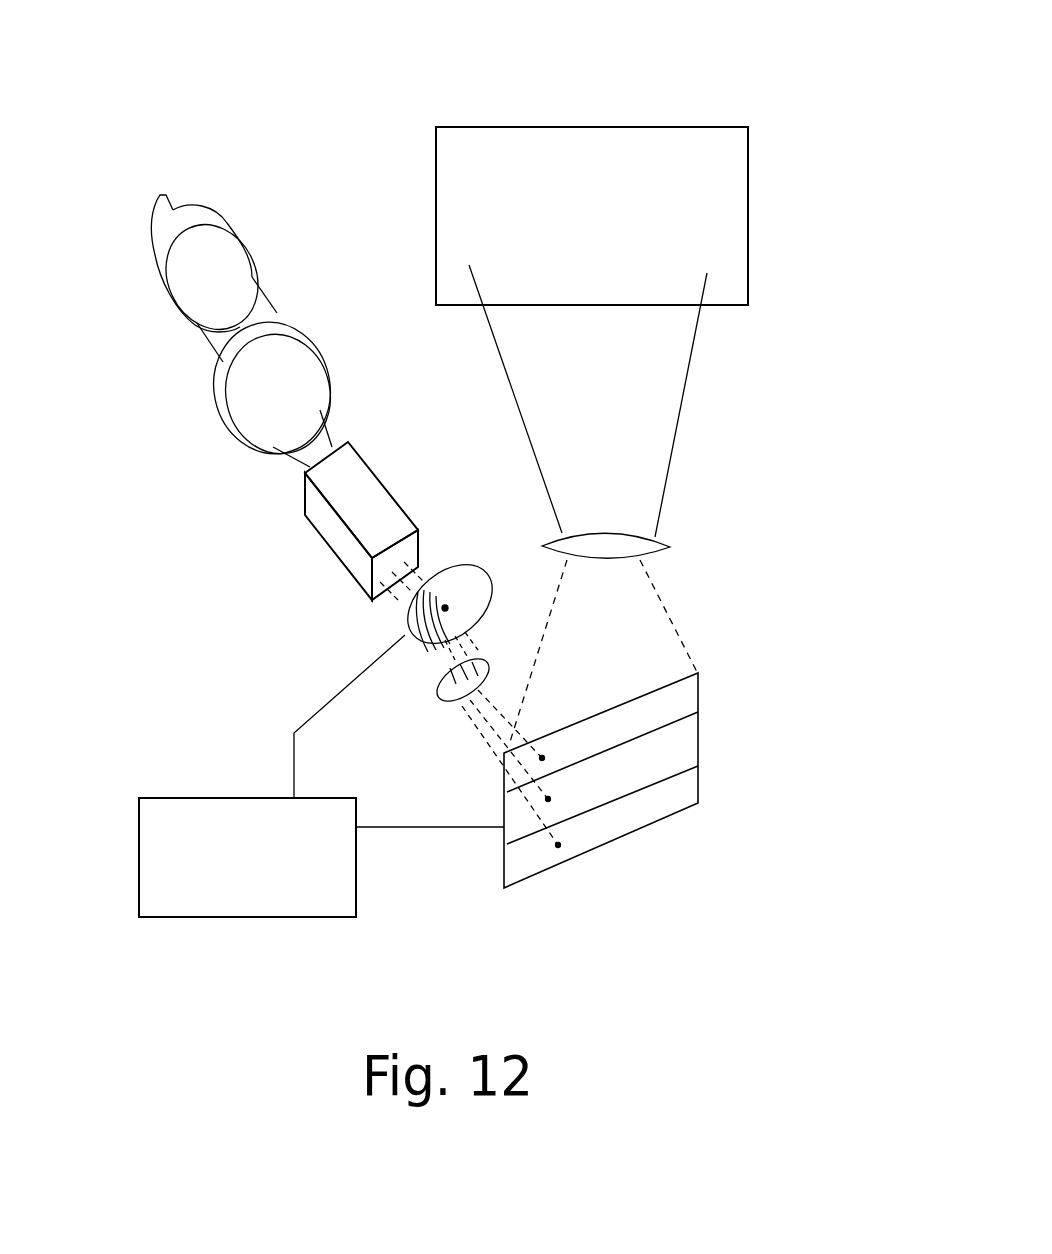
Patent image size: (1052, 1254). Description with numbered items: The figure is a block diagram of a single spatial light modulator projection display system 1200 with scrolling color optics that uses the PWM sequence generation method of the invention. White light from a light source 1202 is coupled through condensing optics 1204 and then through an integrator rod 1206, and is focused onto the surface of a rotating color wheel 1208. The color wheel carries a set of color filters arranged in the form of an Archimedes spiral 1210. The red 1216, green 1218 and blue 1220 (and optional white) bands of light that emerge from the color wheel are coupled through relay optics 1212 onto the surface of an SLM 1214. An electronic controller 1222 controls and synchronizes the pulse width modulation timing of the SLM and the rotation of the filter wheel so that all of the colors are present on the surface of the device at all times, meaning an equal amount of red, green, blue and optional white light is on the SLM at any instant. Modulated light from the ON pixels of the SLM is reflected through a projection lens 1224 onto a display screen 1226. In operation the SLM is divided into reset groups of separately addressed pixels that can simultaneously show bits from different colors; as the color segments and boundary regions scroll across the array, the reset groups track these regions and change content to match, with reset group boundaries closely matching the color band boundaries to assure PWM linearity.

The system 1200 is at (225, 45).
The light source 1202 is at (150, 245).
The condensing optics 1204 is at (215, 420).
The integrator rod 1206 is at (320, 540).
The rotating color wheel 1208 is at (473, 563).
The Archimedes spiral 1210 is at (408, 627).
The relay optics 1212 is at (440, 702).
The SLM 1214 is at (504, 888).
The red band of light 1216 is at (670, 700).
The green band of light 1218 is at (682, 747).
The blue band of light 1220 is at (670, 793).
The electronic controller 1222 is at (253, 917).
The projection lens 1224 is at (668, 547).
The display screen 1226 is at (750, 262).